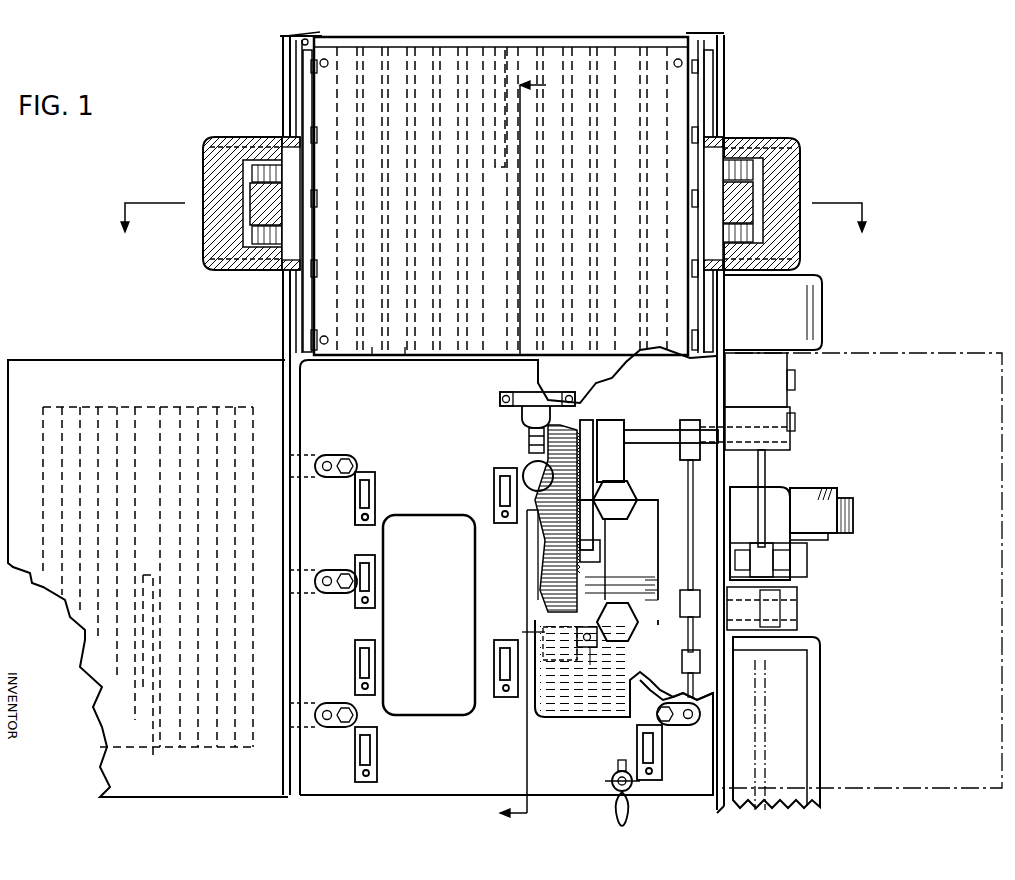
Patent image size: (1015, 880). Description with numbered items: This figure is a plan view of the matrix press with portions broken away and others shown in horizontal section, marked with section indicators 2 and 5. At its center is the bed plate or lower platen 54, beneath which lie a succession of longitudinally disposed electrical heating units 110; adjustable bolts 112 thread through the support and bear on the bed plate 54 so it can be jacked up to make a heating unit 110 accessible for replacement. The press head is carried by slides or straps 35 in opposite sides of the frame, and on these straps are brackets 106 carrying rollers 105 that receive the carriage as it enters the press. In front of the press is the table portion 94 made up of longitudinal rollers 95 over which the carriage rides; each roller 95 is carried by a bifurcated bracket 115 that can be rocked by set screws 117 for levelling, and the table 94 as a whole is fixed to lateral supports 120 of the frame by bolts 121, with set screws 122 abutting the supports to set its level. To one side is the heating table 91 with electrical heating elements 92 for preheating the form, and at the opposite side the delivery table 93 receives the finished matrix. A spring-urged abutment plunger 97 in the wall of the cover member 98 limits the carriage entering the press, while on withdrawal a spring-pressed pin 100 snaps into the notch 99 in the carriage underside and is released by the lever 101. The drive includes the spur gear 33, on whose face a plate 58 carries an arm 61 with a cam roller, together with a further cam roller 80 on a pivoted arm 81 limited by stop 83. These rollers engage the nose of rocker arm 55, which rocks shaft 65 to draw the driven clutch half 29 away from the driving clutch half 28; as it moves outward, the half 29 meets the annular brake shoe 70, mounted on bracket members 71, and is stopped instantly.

The section line 2- 2 is at (529, 450).
The section line 5- 5 is at (492, 231).
The driving clutch half 28 is at (836, 492).
The driven clutch half 29 is at (822, 540).
The spur gear 33 is at (548, 560).
The slides 35 is at (205, 170).
The bed plate 54 is at (501, 196).
The rocker arm 55 is at (612, 470).
The plate 58 is at (584, 580).
The arm 61 is at (592, 515).
The shaft 65 is at (657, 430).
The annular brake shoe 70 is at (853, 515).
The bracket members 71 is at (787, 500).
The cam roller 80 is at (590, 670).
The pivoted arm 81 is at (597, 653).
The stop 83 is at (526, 624).
The table 91 is at (106, 372).
The electrical heating elements 92 is at (219, 420).
The delivery table 93 is at (893, 356).
The table portion 94 is at (486, 782).
The rollers 95 is at (368, 488).
The abutment plunger 97 is at (302, 44).
The cover member 98 is at (286, 36).
The notch 99 is at (527, 428).
The spring-pressed pin 100 is at (613, 776).
The release lever 101 is at (614, 812).
The rollers 105 is at (305, 283).
The brackets 106 is at (290, 245).
The electrical heating units 110 is at (406, 350).
The adjustable bolts 112 is at (310, 336).
The bifurcated bracket 115 is at (355, 507).
The set screws 117 is at (362, 521).
The lateral supports 120 is at (306, 472).
The bolts 121 is at (352, 460).
The set screws 122 is at (327, 462).